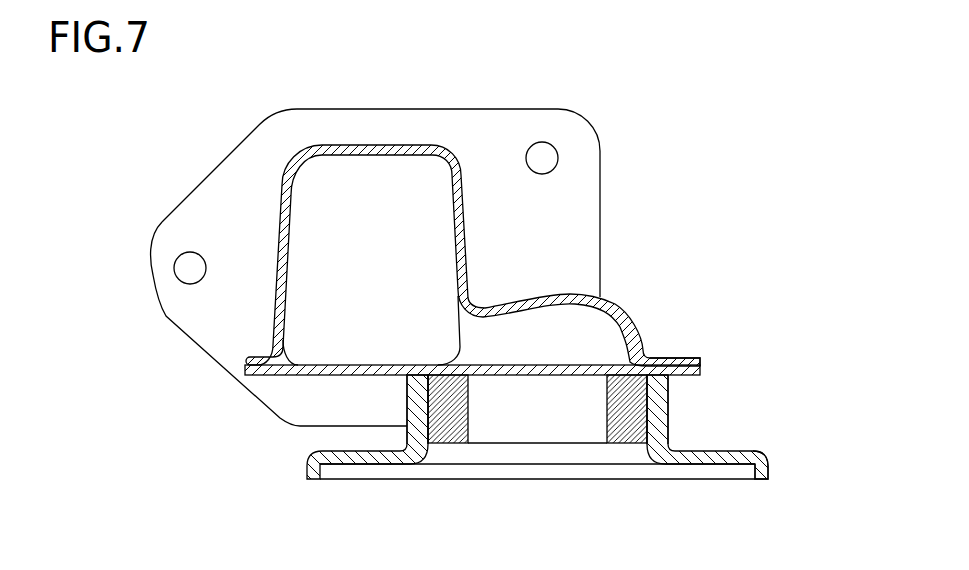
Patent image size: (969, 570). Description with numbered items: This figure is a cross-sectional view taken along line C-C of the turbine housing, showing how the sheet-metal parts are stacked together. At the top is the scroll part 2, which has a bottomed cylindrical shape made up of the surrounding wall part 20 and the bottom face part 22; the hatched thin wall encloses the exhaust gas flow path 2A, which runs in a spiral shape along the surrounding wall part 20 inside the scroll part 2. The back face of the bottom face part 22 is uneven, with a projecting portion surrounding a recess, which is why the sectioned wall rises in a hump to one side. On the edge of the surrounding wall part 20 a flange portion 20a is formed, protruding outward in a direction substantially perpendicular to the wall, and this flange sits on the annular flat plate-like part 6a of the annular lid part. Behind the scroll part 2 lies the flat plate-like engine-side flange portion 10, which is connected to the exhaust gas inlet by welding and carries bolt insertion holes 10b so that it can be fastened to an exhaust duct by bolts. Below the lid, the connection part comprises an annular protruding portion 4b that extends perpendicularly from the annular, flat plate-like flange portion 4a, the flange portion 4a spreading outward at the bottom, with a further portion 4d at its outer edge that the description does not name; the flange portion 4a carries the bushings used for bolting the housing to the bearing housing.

The scroll part 2 is at (432, 206).
The exhaust gas flow path 2A is at (389, 262).
The flange portion 4a is at (558, 461).
The protruding portion 4b is at (670, 416).
The downward lip of flange 4d is at (758, 480).
The flat plate-like part 6a is at (702, 370).
The engine-side flange portion 10 is at (400, 109).
The bolt insertion holes 10b is at (532, 150).
The surrounding wall part 20 is at (432, 206).
The flange portion 20a is at (684, 359).
The bottom face part 22 is at (330, 146).